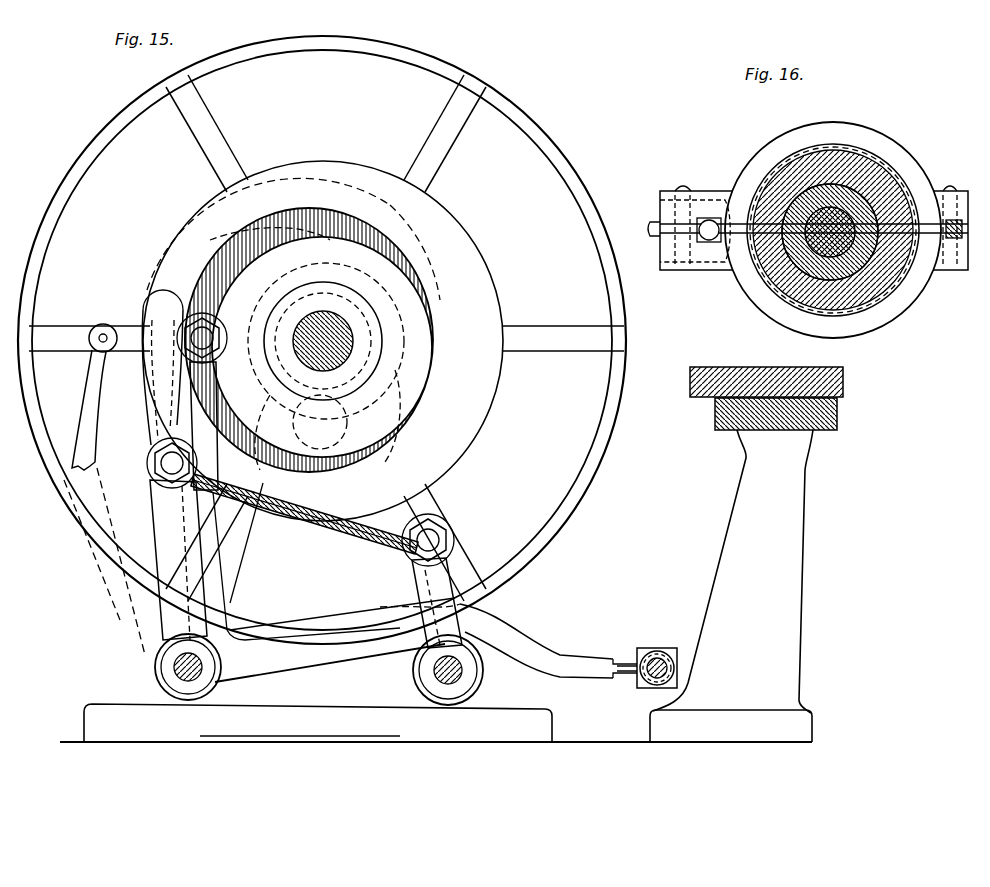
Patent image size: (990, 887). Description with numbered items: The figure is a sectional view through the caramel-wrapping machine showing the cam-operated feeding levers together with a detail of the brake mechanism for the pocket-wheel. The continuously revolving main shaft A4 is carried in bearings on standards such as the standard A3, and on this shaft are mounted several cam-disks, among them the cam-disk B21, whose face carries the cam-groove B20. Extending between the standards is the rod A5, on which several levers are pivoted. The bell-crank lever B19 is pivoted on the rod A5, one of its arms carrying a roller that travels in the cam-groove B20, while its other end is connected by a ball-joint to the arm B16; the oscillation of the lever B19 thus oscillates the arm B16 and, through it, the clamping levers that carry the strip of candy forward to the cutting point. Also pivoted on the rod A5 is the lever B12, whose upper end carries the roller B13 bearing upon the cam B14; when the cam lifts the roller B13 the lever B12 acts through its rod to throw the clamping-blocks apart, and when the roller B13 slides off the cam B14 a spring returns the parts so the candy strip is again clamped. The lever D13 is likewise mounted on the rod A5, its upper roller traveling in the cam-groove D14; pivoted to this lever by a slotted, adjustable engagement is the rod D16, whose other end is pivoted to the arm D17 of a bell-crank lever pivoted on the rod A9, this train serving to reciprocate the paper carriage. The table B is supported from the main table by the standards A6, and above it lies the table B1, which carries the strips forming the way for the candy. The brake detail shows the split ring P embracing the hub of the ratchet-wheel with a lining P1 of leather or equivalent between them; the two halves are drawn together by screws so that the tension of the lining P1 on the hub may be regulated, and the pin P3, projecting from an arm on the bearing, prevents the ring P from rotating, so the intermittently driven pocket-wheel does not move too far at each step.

In FIG. 15, the rod A5 is at (556, 152).
In FIG. 15, the cam-disk B21 is at (497, 278).
In FIG. 15, the cam-groove B20 is at (432, 274).
In FIG. 15, the cam-groove D14 is at (400, 387).
In FIG. 15, the main shaft A4 is at (355, 338).
In FIG. 16, the main shaft A4 is at (870, 250).
In FIG. 15, the lever B19 is at (522, 636).
In FIG. 15, the rod D16 is at (352, 522).
In FIG. 15, the lever D13 is at (200, 578).
In FIG. 15, the arm of bell-crank lever D17 is at (445, 612).
In FIG. 15, the rod A9 is at (438, 676).
In FIG. 15, the standard A3 is at (436, 612).
In FIG. 15, the standards A6 is at (800, 526).
In FIG. 15, the table B1 is at (843, 380).
In FIG. 15, the table B is at (838, 418).
In FIG. 15, the arm B16 is at (678, 664).
In FIG. 15, the roller B13 is at (108, 326).
In FIG. 15, the cam B14 is at (128, 362).
In FIG. 15, the lever B12 is at (88, 444).
In FIG. 16, the split ring P is at (822, 130).
In FIG. 16, the lining P1 is at (880, 165).
In FIG. 16, the pin P3 is at (708, 242).